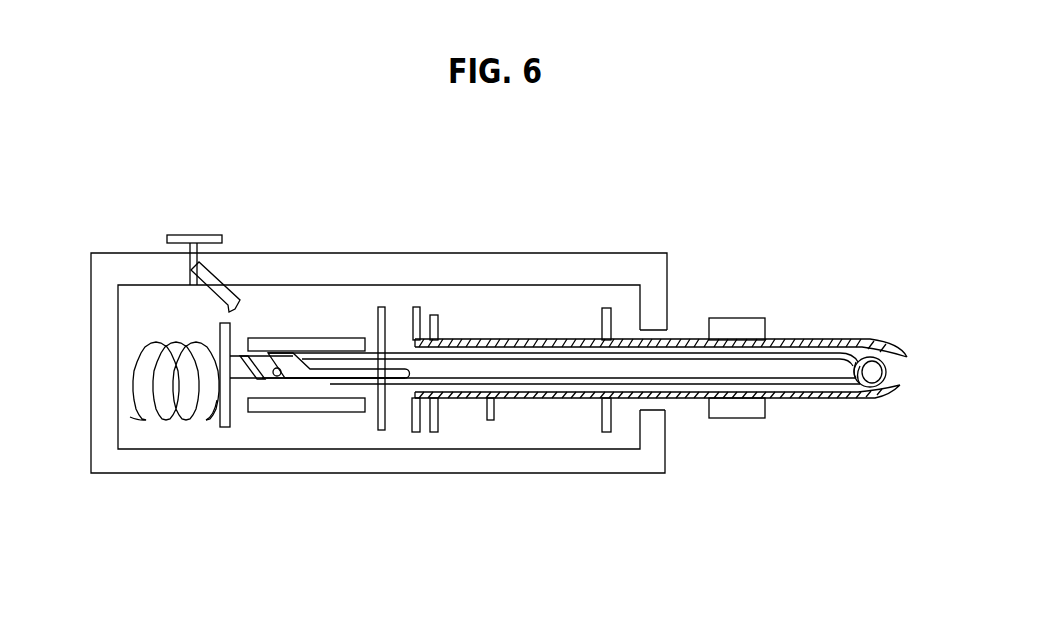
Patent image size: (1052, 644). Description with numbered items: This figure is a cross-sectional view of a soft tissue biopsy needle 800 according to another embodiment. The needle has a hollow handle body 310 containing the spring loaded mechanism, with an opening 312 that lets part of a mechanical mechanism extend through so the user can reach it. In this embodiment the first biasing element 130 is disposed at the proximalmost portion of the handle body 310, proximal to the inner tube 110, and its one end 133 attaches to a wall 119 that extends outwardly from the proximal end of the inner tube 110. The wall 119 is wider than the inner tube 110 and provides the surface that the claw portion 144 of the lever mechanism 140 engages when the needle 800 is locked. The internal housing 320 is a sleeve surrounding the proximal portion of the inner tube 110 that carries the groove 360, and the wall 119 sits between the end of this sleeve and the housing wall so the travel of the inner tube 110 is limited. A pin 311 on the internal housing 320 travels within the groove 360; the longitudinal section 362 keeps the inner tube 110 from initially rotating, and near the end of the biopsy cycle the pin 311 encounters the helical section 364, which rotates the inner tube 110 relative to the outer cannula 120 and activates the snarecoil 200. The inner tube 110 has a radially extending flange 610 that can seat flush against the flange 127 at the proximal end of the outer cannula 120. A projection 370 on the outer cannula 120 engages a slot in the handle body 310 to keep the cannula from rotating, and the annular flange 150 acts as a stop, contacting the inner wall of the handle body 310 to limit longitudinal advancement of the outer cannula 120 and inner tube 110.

The soft tissue biopsy needle 800 is at (495, 198).
The handle body 310 is at (538, 262).
The opening 312 is at (658, 346).
The lever mechanism 140 is at (195, 240).
The claw portion 144 is at (233, 297).
The first biasing element 130 is at (133, 363).
The one end of the first biasing element 133 is at (218, 355).
The wall 119 is at (226, 427).
The groove 360 is at (301, 356).
The helical groove section 364 is at (257, 368).
The pin 311 is at (277, 377).
The longitudinal section 362 is at (385, 375).
The internal housing 320 is at (346, 344).
The flange 610 is at (380, 425).
The flange 127 is at (416, 432).
The projection 370 is at (435, 424).
The flange 150 is at (608, 425).
The outer cannula 120 is at (793, 393).
The inner tube 110 is at (797, 358).
The snarecoil 200 is at (860, 351).